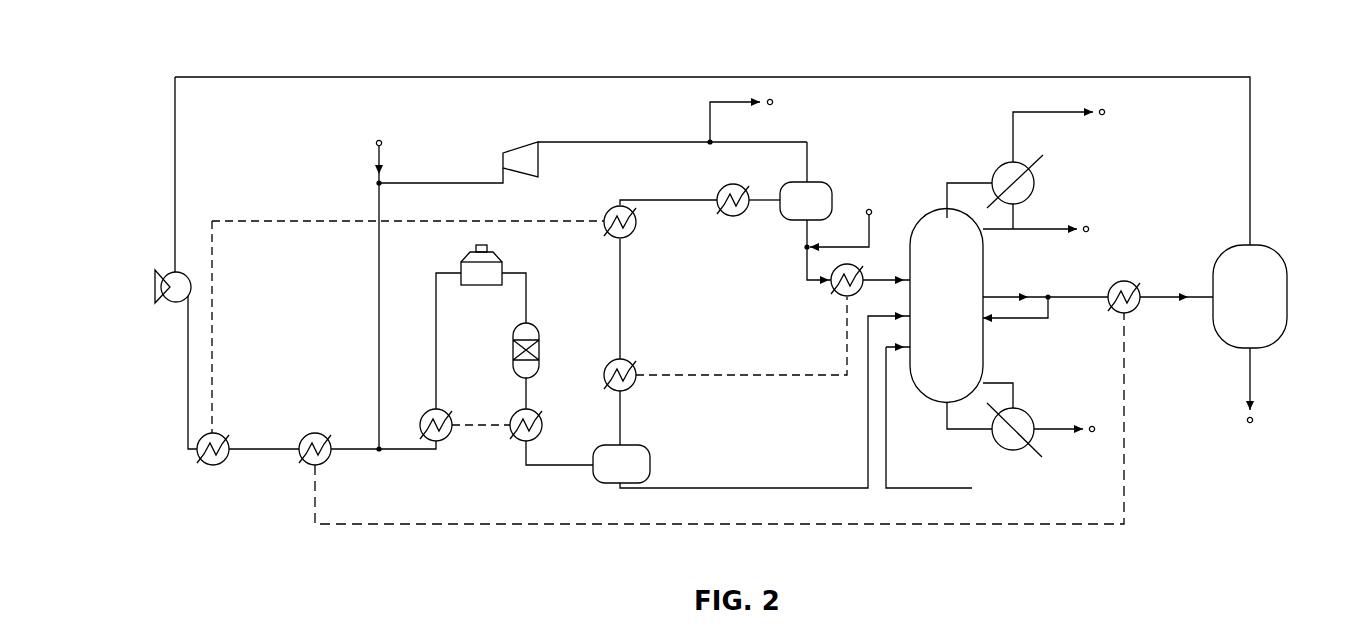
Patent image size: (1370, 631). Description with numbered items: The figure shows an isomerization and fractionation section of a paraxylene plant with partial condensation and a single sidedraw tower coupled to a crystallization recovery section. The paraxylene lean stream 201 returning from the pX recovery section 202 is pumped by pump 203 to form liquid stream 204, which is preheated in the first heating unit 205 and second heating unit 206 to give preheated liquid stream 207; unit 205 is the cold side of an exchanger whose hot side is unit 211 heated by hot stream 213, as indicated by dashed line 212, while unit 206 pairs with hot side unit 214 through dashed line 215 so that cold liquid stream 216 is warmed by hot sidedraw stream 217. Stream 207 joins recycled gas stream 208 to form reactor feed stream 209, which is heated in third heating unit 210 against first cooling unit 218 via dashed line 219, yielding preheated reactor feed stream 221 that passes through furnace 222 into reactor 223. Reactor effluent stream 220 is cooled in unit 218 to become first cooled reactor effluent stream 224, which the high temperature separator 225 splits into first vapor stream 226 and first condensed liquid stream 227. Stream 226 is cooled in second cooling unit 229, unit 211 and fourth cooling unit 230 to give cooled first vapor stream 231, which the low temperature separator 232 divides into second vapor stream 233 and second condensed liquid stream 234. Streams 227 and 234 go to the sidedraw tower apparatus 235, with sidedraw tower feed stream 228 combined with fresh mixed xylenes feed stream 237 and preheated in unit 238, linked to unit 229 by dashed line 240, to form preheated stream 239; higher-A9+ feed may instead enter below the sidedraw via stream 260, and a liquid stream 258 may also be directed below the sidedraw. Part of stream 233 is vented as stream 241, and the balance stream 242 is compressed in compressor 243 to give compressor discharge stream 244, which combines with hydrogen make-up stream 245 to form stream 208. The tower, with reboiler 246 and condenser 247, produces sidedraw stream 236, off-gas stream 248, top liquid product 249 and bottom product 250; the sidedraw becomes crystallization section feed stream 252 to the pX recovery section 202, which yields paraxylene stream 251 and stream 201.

The pX lean stream 201 is at (1253, 150).
The pX recovery section 202 is at (1272, 252).
The pump 203 is at (158, 285).
The liquid stream 204 is at (186, 375).
The first heating unit 205 is at (212, 468).
The second heating unit 206 is at (320, 435).
The preheated liquid stream 207 is at (345, 452).
The recycled gas stream 208 is at (376, 272).
The reactor feed stream 209 is at (397, 452).
The third heating unit 210 is at (445, 440).
The third cooling unit 211 is at (630, 240).
The dashed line 212 is at (497, 221).
The hot stream 213 is at (618, 272).
The hot side unit 214 is at (1135, 285).
The dashed line 215 is at (970, 527).
The cold liquid stream 216 is at (263, 447).
The hot sidedraw stream 217 is at (1090, 300).
The first cooling unit 218 is at (545, 425).
The dashed line 219 is at (490, 430).
The reactor effluent stream 220 is at (528, 400).
The preheated reactor feed stream 221 is at (434, 305).
The heating unit 222 is at (500, 256).
The reactor 223 is at (540, 332).
The first cooled reactor effluent stream 224 is at (553, 470).
The high temperature separator 225 is at (652, 462).
The first vapor stream 226 is at (622, 420).
The first condensed liquid stream 227 is at (750, 490).
The sidedraw tower feed stream 228 is at (800, 266).
The second cooling unit 229 is at (604, 366).
The fourth cooling unit 230 is at (720, 215).
The cooled first vapor stream 231 is at (760, 206).
The low temperature separator 232 is at (830, 190).
The second vapor stream 233 is at (785, 132).
The second condensed liquid stream 234 is at (800, 232).
The sidedraw tower apparatus 235 is at (990, 272).
The sidedraw stream 236 is at (1012, 297).
The fresh mixed xylenes feed stream 237 is at (872, 205).
The preheating unit 238 is at (838, 298).
The preheated second condensed liquid stream 239 is at (880, 276).
The dashed line 240 is at (690, 372).
The vent stream 241 is at (740, 100).
The balance stream 242 is at (650, 140).
The compressor 243 is at (520, 150).
The compressor discharge stream 244 is at (447, 182).
The hydrogen make-up stream 245 is at (375, 146).
The sidedraw tower reboiler 246 is at (1035, 415).
The sidedraw tower condenser 247 is at (1040, 175).
The sidedraw tower off-gas stream 248 is at (1058, 110).
The top liquid product 249 is at (1050, 225).
The sidedraw tower bottom product 250 is at (1060, 432).
The paraxylene stream 251 is at (1253, 385).
The crystallization section feed stream 252 is at (1155, 300).
The liquid stream 258 is at (1020, 320).
The fresh feed stream 260 is at (888, 486).